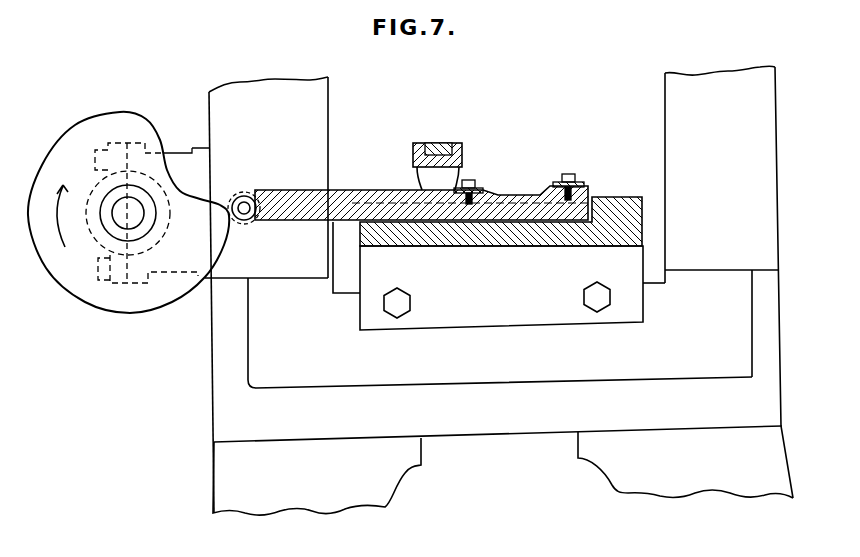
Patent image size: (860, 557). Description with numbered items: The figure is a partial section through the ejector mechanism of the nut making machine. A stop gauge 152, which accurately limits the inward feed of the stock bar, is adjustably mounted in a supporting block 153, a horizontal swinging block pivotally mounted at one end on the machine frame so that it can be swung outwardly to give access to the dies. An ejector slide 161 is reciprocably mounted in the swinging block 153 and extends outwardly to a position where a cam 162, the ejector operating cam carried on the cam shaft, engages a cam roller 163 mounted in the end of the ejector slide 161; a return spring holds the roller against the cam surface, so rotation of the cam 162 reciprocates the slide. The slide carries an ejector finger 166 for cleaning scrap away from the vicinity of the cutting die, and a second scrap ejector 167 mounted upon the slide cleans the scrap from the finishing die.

The stop gauge 152 is at (444, 143).
The supporting block 153 is at (502, 233).
The ejector slide 161 is at (350, 190).
The cam 162 is at (74, 287).
The cam roller 163 is at (241, 192).
The ejector finger 166 is at (477, 188).
The second scrap ejector 167 is at (580, 182).